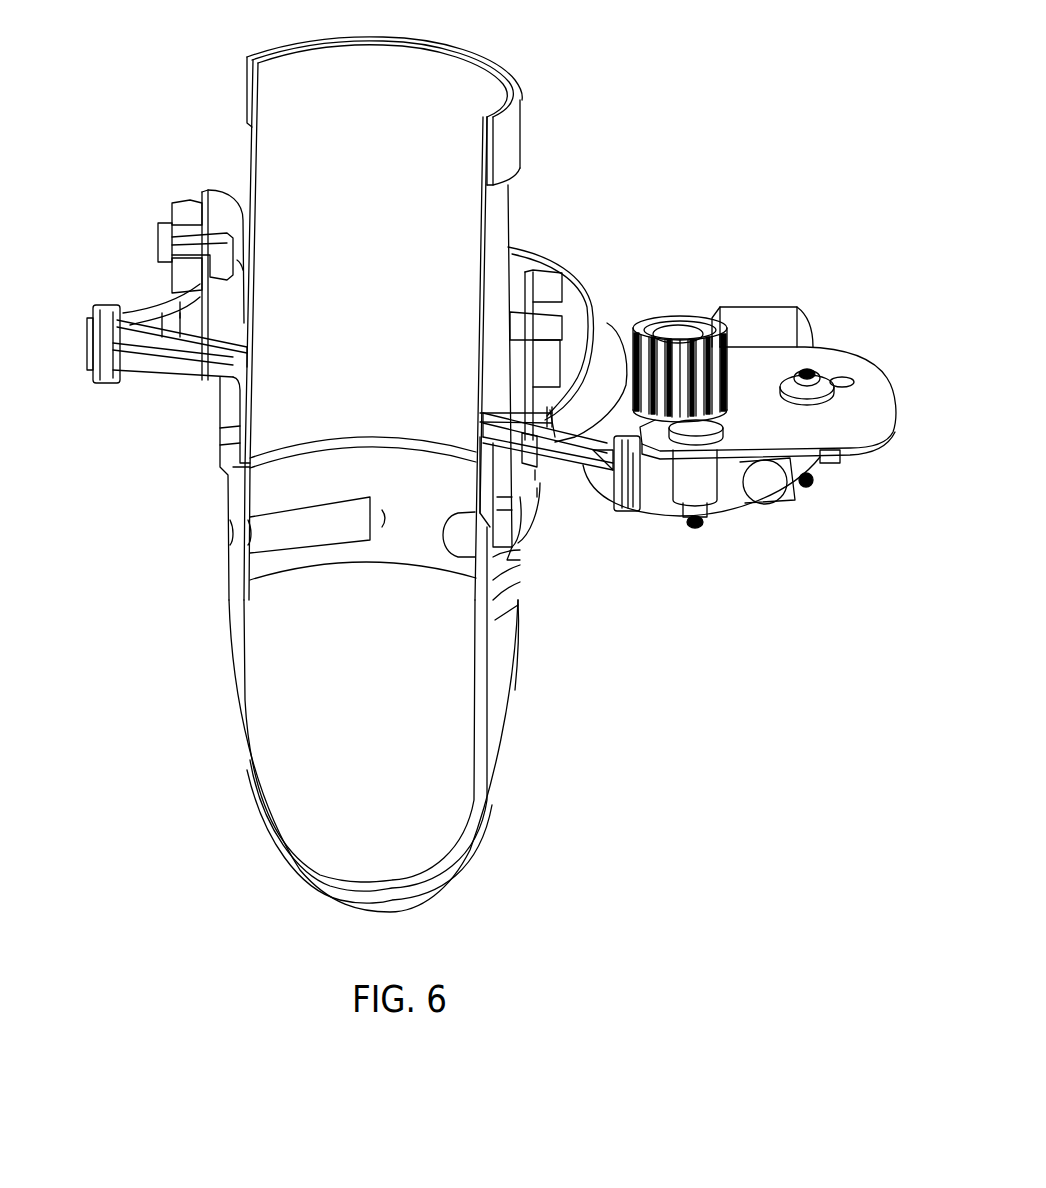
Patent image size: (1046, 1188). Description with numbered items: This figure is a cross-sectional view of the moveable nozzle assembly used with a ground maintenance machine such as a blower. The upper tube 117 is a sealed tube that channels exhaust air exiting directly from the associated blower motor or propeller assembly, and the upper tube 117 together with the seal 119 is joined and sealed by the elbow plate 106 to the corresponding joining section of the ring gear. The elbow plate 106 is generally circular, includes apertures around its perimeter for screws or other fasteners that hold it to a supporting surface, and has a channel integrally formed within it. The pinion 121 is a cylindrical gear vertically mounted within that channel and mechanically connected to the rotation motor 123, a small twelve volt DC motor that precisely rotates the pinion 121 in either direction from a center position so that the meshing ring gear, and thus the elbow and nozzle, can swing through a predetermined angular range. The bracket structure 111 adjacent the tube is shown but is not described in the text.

The elbow plate 106 is at (845, 360).
The container holder bracket 111 is at (585, 287).
The upper tube 117 is at (497, 215).
The seal 119 is at (507, 131).
The pinion 121 is at (686, 318).
The rotation motor 123 is at (770, 318).